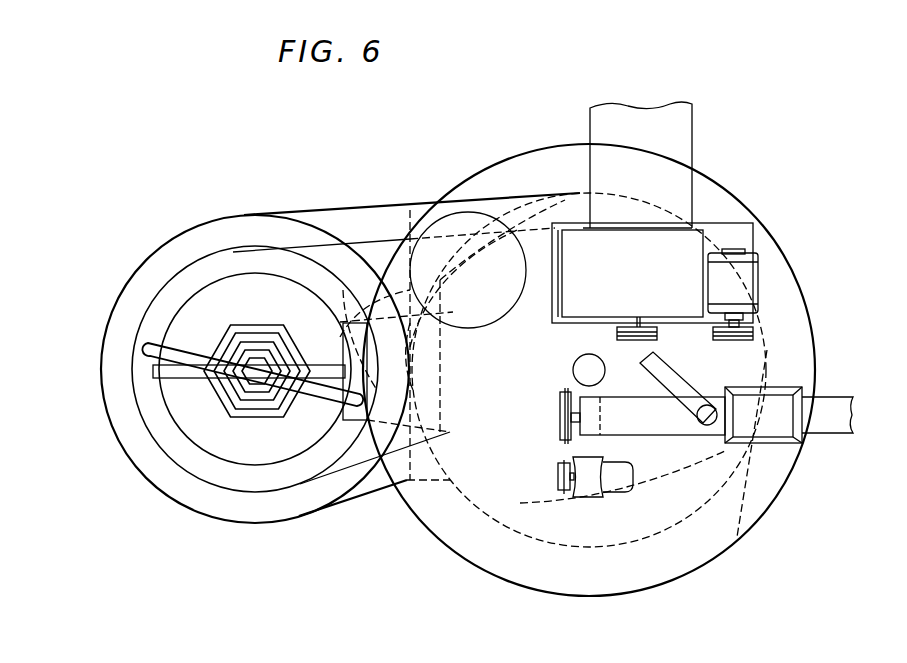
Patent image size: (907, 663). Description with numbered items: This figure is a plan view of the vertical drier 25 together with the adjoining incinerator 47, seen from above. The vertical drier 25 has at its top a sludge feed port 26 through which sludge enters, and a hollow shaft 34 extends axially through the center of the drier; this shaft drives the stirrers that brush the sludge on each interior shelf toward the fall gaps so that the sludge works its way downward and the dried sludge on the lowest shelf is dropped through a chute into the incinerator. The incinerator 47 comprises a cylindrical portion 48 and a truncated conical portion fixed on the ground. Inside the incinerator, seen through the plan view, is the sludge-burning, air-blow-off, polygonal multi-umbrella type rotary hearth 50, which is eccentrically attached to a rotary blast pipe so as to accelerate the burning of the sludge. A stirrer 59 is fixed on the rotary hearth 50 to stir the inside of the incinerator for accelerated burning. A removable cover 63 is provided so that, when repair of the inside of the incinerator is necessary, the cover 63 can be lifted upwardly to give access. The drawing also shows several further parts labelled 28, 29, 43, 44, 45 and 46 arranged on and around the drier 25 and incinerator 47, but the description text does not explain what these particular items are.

The vertical drier 25 is at (767, 370).
The sludge feed port 26 is at (590, 432).
The mounting box 28 is at (840, 398).
The roller assembly 29 is at (590, 493).
The hollow shaft 34 is at (573, 365).
The drum housing 43 is at (807, 322).
The support column 44 is at (680, 143).
The motor housing 45 is at (677, 265).
The motor 46 is at (753, 281).
The incinerator 47 is at (105, 396).
The cylindrical portion 48 is at (143, 415).
The rotary hearth 50 is at (270, 413).
The stirrer 59 is at (187, 352).
The cover 63 is at (295, 227).